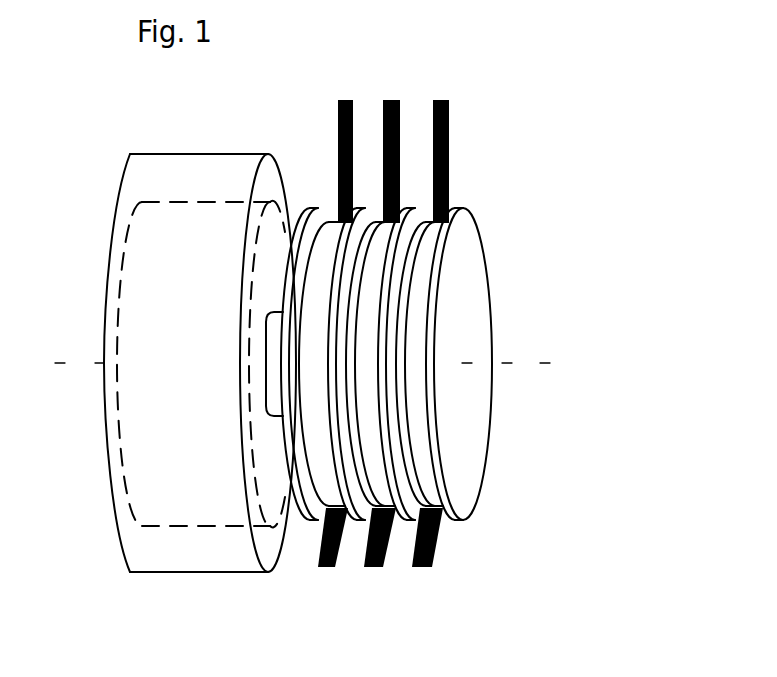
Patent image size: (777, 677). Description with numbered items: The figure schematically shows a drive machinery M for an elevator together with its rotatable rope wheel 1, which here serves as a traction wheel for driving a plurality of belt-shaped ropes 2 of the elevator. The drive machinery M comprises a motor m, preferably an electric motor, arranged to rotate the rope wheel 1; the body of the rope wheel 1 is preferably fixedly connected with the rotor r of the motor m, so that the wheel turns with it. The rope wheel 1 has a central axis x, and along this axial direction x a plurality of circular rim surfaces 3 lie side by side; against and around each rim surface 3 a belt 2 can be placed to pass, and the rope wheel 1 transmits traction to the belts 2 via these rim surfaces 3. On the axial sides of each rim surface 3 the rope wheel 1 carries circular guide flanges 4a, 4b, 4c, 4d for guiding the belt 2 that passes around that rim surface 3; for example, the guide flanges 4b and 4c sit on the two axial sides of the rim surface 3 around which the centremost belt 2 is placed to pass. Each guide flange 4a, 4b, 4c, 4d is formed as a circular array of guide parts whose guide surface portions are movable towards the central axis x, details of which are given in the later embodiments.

The drive machinery M is at (100, 118).
The motor m is at (110, 240).
The rotor r is at (167, 400).
The central axis x is at (317, 363).
The rope wheel 1 is at (540, 243).
The belt-shaped rope 2 is at (449, 108).
The circular rim surface 3 is at (317, 317).
The circular guide flange 4a is at (323, 210).
The circular guide flange 4b is at (365, 210).
The circular guide flange 4c is at (410, 210).
The circular guide flange 4d is at (458, 209).